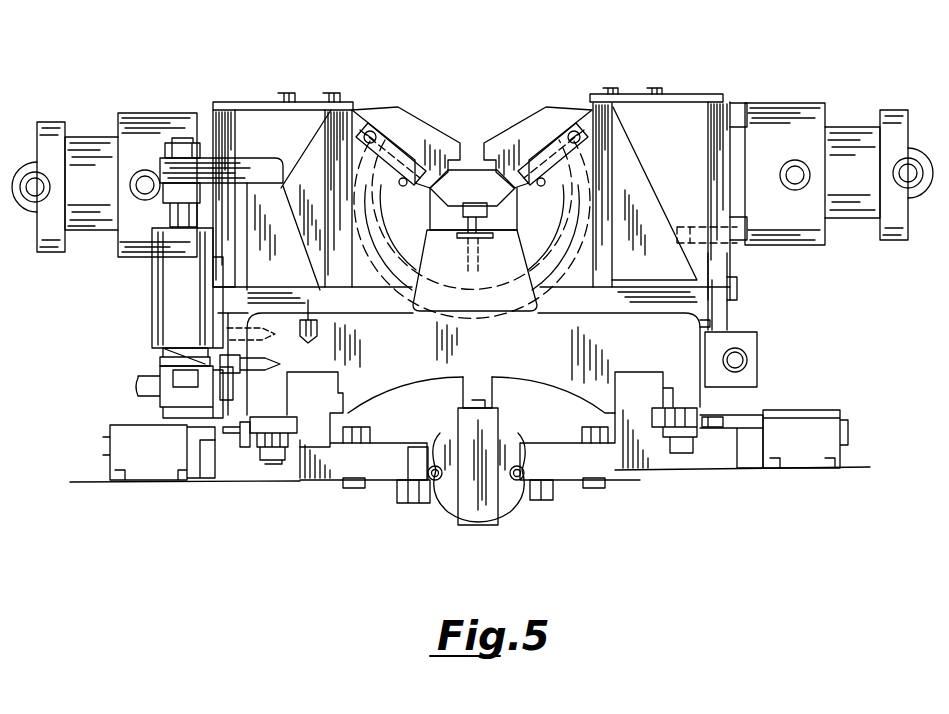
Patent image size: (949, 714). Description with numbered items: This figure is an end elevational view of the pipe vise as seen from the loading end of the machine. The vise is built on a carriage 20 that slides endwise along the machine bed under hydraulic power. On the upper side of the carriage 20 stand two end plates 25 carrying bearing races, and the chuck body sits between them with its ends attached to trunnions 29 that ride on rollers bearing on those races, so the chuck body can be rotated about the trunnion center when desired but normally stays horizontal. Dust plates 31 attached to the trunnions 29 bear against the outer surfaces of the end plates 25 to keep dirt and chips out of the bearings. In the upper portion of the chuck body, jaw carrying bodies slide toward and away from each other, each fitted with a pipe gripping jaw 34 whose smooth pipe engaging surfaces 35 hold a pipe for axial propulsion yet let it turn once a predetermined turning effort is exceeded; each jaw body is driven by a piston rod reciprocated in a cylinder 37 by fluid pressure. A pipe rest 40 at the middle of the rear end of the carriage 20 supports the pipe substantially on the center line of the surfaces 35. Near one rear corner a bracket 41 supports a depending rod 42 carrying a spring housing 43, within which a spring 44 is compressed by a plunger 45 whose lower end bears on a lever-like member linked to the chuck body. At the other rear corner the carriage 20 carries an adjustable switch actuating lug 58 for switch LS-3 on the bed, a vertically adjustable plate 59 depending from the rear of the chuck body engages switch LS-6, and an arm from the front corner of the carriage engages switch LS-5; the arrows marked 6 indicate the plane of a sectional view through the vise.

The section line 6- 6 is at (472, 137).
The carriage 20 is at (526, 345).
The end plates 25 is at (318, 148).
The trunnions 29 is at (386, 246).
The dust plates 31 is at (488, 249).
The pipe gripping jaw 34 is at (423, 130).
The pipe engaging surfaces 35 is at (472, 188).
The cylinder 37 is at (127, 115).
The pipe rest 40 is at (503, 207).
The bracket 41 is at (235, 165).
The depending rod 42 is at (165, 193).
The spring housing 43 is at (172, 277).
The spring 44 is at (160, 351).
The plunger 45 is at (163, 366).
The switch actuating lug 58 is at (710, 433).
The vertically adjustable plate 59 is at (720, 273).
The switch LS-3 is at (797, 420).
The switch LS-5 is at (163, 465).
The switch LS-6 is at (747, 373).